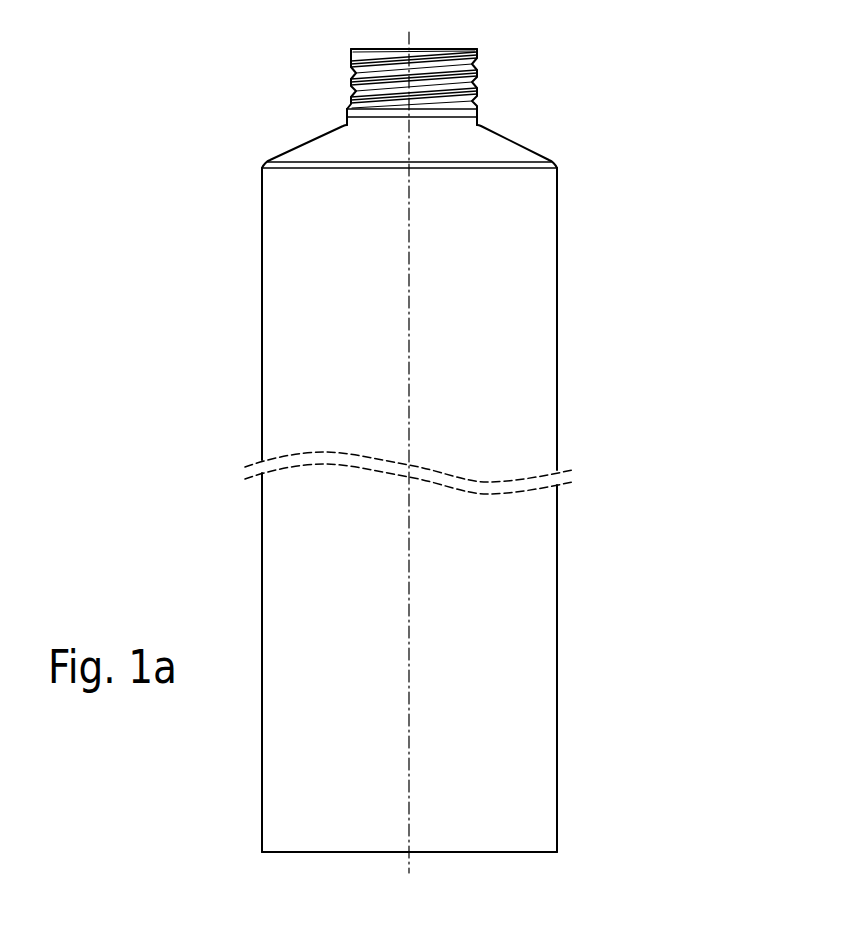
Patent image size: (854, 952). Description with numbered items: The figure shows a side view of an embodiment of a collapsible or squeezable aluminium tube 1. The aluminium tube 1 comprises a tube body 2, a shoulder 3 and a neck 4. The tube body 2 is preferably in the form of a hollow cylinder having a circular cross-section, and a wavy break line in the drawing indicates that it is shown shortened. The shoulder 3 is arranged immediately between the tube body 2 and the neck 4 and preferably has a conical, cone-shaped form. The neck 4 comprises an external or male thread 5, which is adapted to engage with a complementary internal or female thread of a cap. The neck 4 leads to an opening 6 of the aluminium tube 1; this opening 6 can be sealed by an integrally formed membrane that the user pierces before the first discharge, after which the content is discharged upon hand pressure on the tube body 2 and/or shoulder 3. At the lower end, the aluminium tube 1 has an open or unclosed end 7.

The collapsible or squeezable aluminium tube 1 is at (378, 453).
The tube body 2 is at (537, 310).
The shoulder 3 is at (490, 140).
The neck 4 is at (474, 104).
The external or male thread 5 is at (350, 68).
The opening 6 is at (452, 50).
The open or unclosed end 7 is at (498, 852).